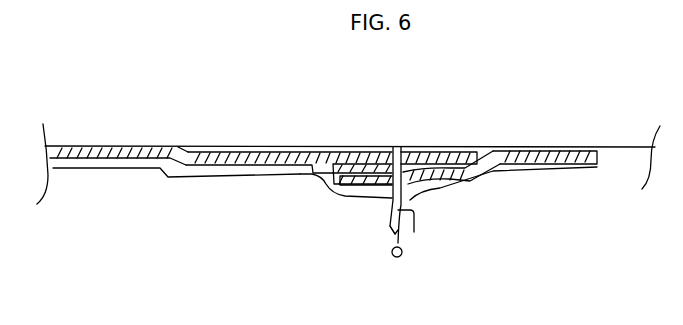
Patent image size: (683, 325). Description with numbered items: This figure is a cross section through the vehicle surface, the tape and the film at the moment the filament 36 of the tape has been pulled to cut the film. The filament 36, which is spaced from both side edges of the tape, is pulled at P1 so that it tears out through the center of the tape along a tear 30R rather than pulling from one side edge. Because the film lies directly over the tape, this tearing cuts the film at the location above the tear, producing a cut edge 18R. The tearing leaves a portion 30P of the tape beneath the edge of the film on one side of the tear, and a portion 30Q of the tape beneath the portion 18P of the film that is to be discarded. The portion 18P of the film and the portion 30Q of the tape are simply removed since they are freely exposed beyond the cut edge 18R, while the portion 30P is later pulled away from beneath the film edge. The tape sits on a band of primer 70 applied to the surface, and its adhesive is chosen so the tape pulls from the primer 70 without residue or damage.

The primer 70 is at (253, 150).
The portion of the tape 30P is at (364, 152).
The tear 30R is at (398, 150).
The portion of the tape 30Q is at (420, 152).
The portion of the film 18P is at (500, 151).
The cut edge 18R is at (413, 200).
The pull point P1 is at (408, 251).
The filament 36 is at (397, 257).